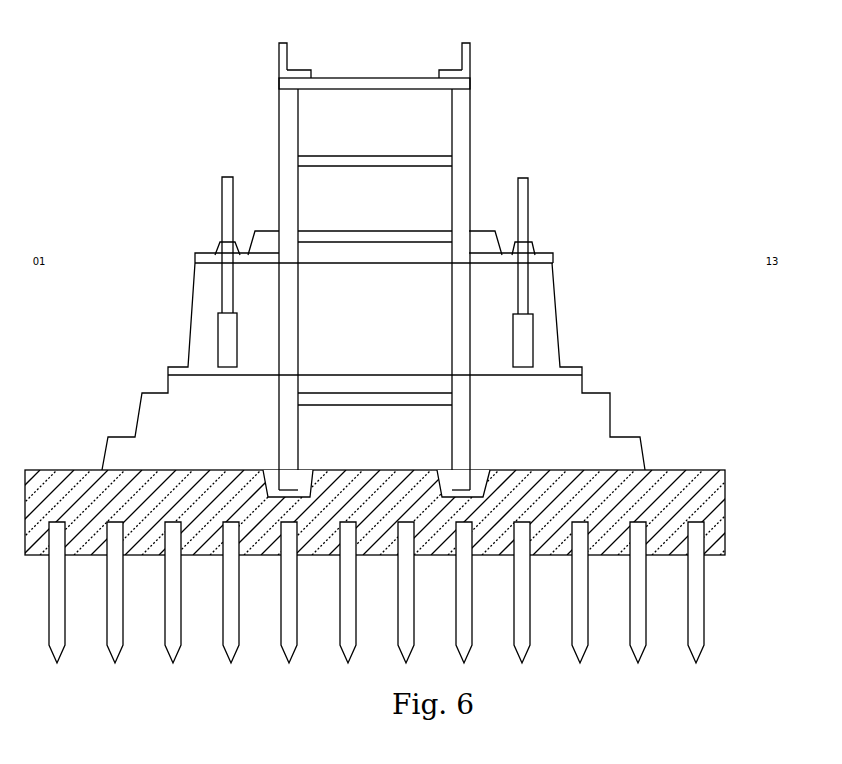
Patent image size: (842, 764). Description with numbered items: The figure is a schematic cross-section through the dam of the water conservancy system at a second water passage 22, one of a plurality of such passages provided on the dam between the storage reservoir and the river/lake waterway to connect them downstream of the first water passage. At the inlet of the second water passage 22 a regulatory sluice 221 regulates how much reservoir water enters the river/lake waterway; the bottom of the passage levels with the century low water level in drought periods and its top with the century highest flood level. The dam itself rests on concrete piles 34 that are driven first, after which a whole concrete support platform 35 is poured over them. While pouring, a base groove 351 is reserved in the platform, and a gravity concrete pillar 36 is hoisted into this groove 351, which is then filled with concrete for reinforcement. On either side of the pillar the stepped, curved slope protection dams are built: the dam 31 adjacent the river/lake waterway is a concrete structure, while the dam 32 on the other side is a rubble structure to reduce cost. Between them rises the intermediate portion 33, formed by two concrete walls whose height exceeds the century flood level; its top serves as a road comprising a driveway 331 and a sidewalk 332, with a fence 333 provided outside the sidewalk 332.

The second water passage 22 is at (538, 302).
The regulatory sluice 221 is at (522, 200).
The dam 31 is at (203, 430).
The dam 32 is at (550, 420).
The intermediate portion 33 is at (405, 255).
The driveway 331 is at (367, 77).
The sidewalk 332 is at (447, 70).
The fence 333 is at (466, 52).
The concrete piles 34 is at (698, 588).
The concrete support platform 35 is at (703, 500).
The base groove 351 is at (528, 470).
The gravity concrete pillar 36 is at (465, 400).